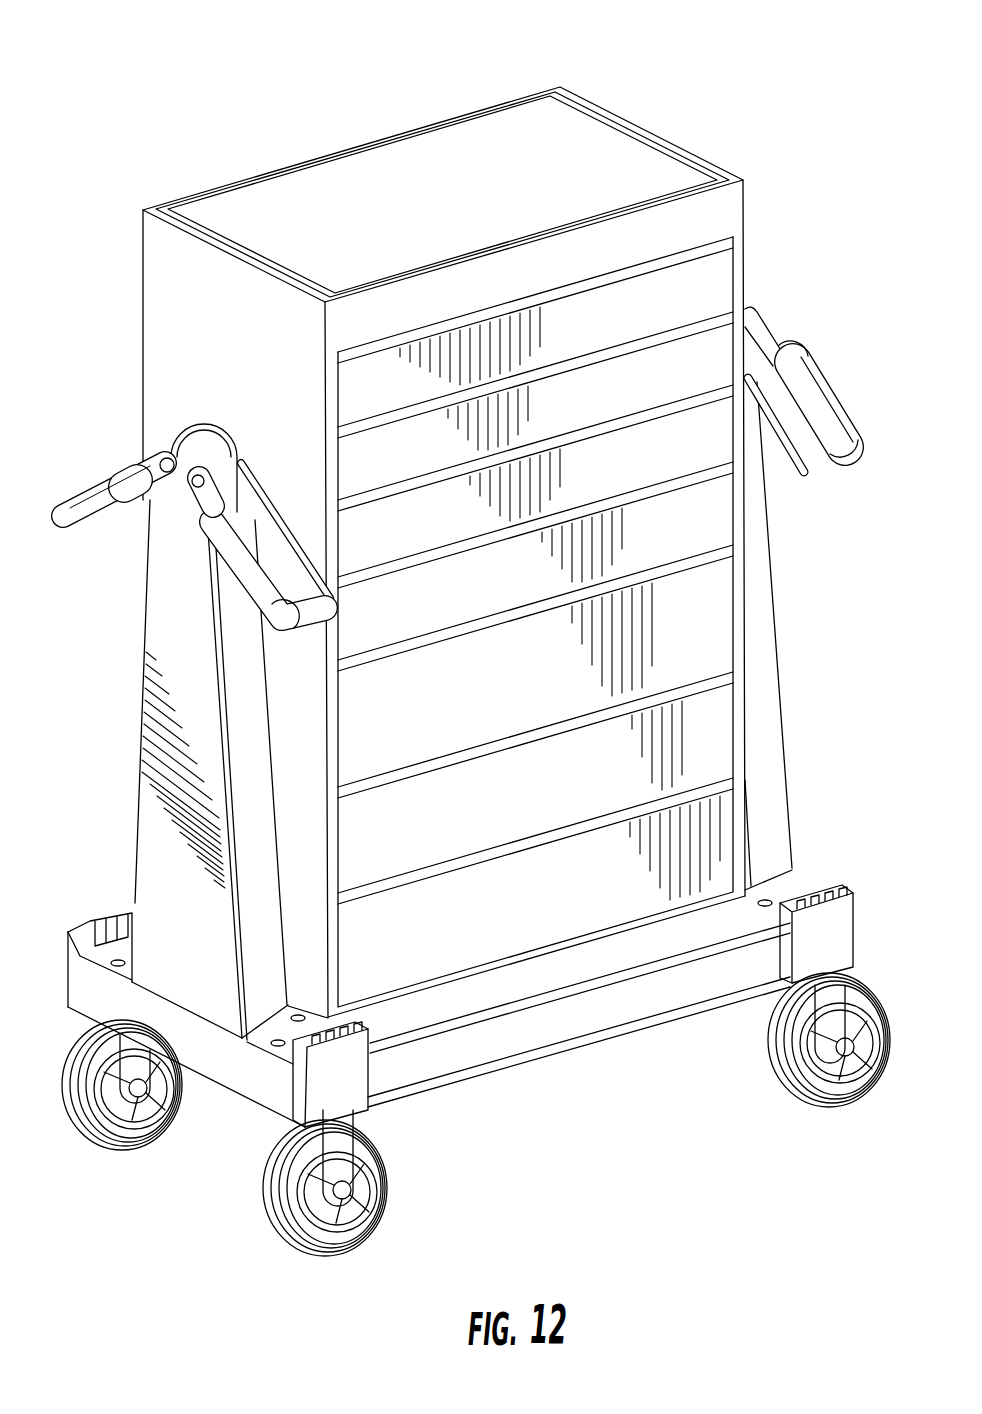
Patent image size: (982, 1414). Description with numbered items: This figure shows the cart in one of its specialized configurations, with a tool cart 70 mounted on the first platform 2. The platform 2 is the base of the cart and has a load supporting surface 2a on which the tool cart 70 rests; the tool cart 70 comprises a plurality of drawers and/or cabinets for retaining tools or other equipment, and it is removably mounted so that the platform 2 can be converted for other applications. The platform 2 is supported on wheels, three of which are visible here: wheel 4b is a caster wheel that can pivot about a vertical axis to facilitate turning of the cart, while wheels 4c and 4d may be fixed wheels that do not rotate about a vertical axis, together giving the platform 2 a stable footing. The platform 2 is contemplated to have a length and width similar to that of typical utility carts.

The tool cart 70 is at (536, 76).
The first platform 2 is at (585, 1025).
The load supporting surface 2a is at (528, 983).
The caster wheel 4b is at (830, 1107).
The fixed wheel 4c is at (342, 1247).
The fixed wheel 4d is at (102, 1142).